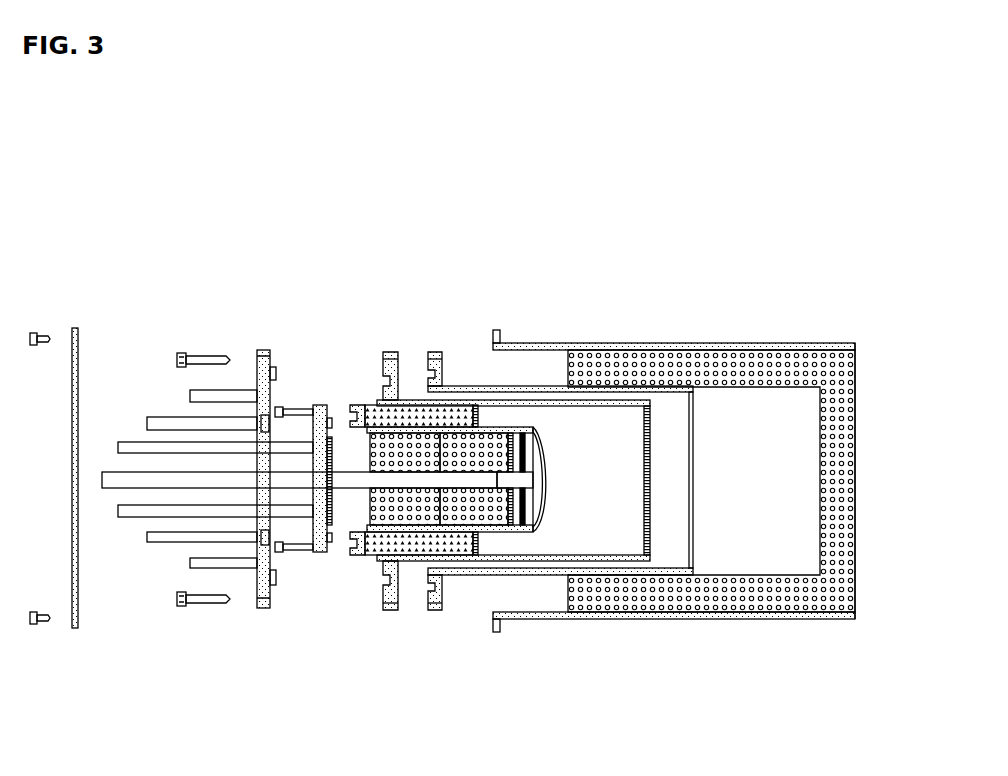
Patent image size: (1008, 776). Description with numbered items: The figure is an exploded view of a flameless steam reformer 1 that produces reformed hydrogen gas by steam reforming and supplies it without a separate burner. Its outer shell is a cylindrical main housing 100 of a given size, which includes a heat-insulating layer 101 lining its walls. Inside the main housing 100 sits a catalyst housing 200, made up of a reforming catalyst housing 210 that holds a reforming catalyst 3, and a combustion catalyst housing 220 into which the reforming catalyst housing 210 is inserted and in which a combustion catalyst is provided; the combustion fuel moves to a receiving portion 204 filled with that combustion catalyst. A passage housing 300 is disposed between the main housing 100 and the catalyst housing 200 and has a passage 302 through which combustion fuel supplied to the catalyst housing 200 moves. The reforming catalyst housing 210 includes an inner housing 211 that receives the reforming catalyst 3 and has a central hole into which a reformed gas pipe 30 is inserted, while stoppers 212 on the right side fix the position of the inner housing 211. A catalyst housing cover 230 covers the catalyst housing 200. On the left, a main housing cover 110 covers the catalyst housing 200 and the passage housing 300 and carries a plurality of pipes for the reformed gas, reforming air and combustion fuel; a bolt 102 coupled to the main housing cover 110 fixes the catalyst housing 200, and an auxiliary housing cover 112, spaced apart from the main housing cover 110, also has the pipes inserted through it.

The flameless steam reformer 1 is at (816, 197).
The main housing 100 is at (858, 333).
The heat-insulating layer 101 is at (856, 371).
The bolt 102 is at (205, 604).
The main housing cover 110 is at (256, 342).
The auxiliary housing cover 112 is at (83, 320).
The catalyst housing 200 is at (288, 285).
The catalyst housing cover 230 is at (315, 395).
The reforming catalyst housing 210 is at (363, 392).
The combustion catalyst housing 220 is at (417, 392).
The passage housing 300 is at (477, 383).
The passage 302 is at (521, 398).
The reformed gas pipe 30 is at (108, 486).
The inner housing 211 is at (362, 518).
The reforming catalyst 3 is at (390, 522).
The receiving portion 204 is at (413, 548).
The stopper 212 is at (518, 533).